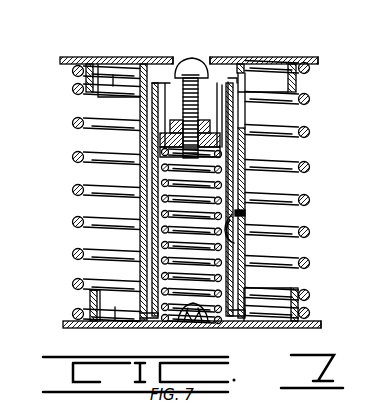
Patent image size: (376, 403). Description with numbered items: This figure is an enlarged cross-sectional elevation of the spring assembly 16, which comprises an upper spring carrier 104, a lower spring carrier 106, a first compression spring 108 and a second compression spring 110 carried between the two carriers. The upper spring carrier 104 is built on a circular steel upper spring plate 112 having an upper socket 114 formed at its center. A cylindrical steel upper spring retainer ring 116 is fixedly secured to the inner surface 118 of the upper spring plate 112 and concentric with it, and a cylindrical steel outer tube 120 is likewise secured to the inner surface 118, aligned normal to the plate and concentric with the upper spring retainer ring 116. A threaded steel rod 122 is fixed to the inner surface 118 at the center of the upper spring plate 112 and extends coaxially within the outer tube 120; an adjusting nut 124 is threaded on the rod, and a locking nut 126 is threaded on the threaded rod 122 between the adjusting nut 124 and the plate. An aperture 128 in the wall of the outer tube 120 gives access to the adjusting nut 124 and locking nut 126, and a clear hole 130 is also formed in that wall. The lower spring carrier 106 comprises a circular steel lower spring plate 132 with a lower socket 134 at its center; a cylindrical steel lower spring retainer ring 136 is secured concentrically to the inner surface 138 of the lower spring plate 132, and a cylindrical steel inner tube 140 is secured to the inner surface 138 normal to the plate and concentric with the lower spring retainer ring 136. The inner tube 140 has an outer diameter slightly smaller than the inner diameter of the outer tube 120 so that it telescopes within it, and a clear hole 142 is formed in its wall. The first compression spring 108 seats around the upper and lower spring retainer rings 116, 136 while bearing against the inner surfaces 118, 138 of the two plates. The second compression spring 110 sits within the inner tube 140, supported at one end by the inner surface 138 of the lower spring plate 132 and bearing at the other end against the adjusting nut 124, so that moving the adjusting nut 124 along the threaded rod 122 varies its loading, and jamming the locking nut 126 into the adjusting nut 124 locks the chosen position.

The spring assembly 16 is at (56, 50).
The upper spring carrier 104 is at (316, 57).
The lower spring carrier 106 is at (318, 328).
The first compression spring 108 is at (74, 90).
The second compression spring 110 is at (170, 203).
The upper spring plate 112 is at (66, 57).
The upper socket 114 is at (197, 57).
The upper spring retainer ring 116 is at (297, 86).
The inner surface 118 is at (104, 65).
The outer tube 120 is at (140, 99).
The threaded rod 122 is at (190, 77).
The adjusting nut 124 is at (160, 138).
The locking nut 126 is at (175, 87).
The aperture 128 is at (242, 148).
The clear hole 130 is at (246, 216).
The lower spring plate 132 is at (65, 328).
The lower socket 134 is at (190, 317).
The lower spring retainer ring 136 is at (88, 300).
The inner surface 138 is at (128, 317).
The inner tube 140 is at (156, 235).
The clear hole 142 is at (236, 245).